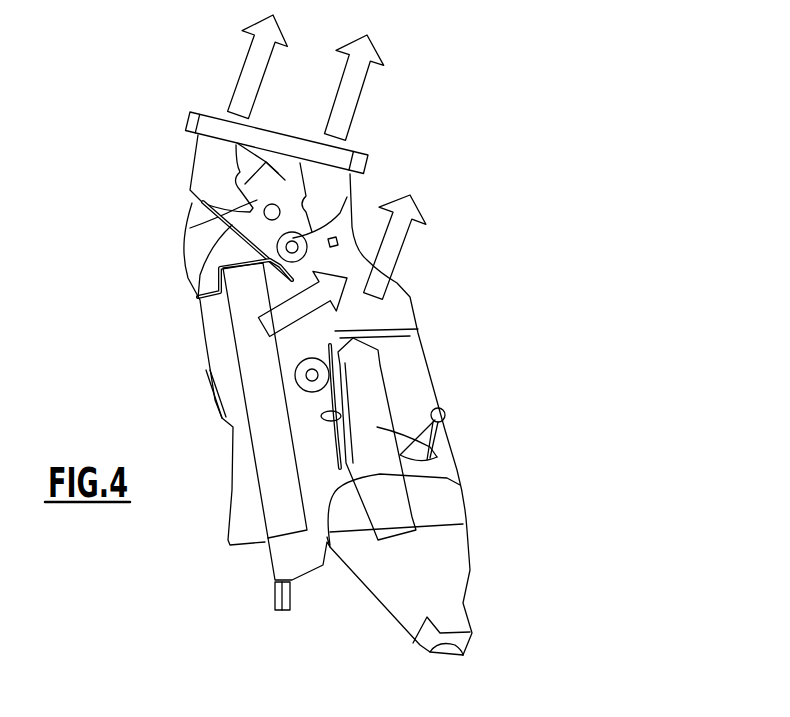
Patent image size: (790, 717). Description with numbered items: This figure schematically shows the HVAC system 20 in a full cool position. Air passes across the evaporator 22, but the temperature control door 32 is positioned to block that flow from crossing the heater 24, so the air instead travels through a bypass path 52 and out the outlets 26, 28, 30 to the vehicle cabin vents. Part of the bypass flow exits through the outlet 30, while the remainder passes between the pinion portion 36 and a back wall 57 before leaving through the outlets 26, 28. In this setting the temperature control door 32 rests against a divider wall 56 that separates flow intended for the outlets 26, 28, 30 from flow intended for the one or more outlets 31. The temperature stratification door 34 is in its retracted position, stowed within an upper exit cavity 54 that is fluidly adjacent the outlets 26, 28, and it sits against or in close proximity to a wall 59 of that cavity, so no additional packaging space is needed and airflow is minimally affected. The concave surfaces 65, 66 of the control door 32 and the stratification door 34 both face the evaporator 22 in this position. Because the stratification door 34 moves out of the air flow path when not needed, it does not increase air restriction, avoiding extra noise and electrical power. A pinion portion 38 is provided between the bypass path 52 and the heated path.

The HVAC system 20 is at (100, 128).
The evaporator 22 is at (248, 341).
The heater 24 is at (437, 448).
The outlet 26 is at (218, 118).
The outlet 28 is at (350, 157).
The outlet 30 is at (392, 263).
The outlet 31 is at (440, 655).
The temperature control door 32 is at (340, 433).
The temperature stratification door 34 is at (212, 250).
The pinion portion 36 is at (300, 240).
The pinion portion 38 is at (312, 375).
The bypass path 52 is at (308, 300).
The upper exit cavity 54 is at (220, 185).
The divider wall 56 is at (450, 479).
The back wall 57 is at (352, 230).
The wall 59 is at (222, 218).
The concave surface 65 is at (320, 418).
The concave surface 66 is at (258, 182).